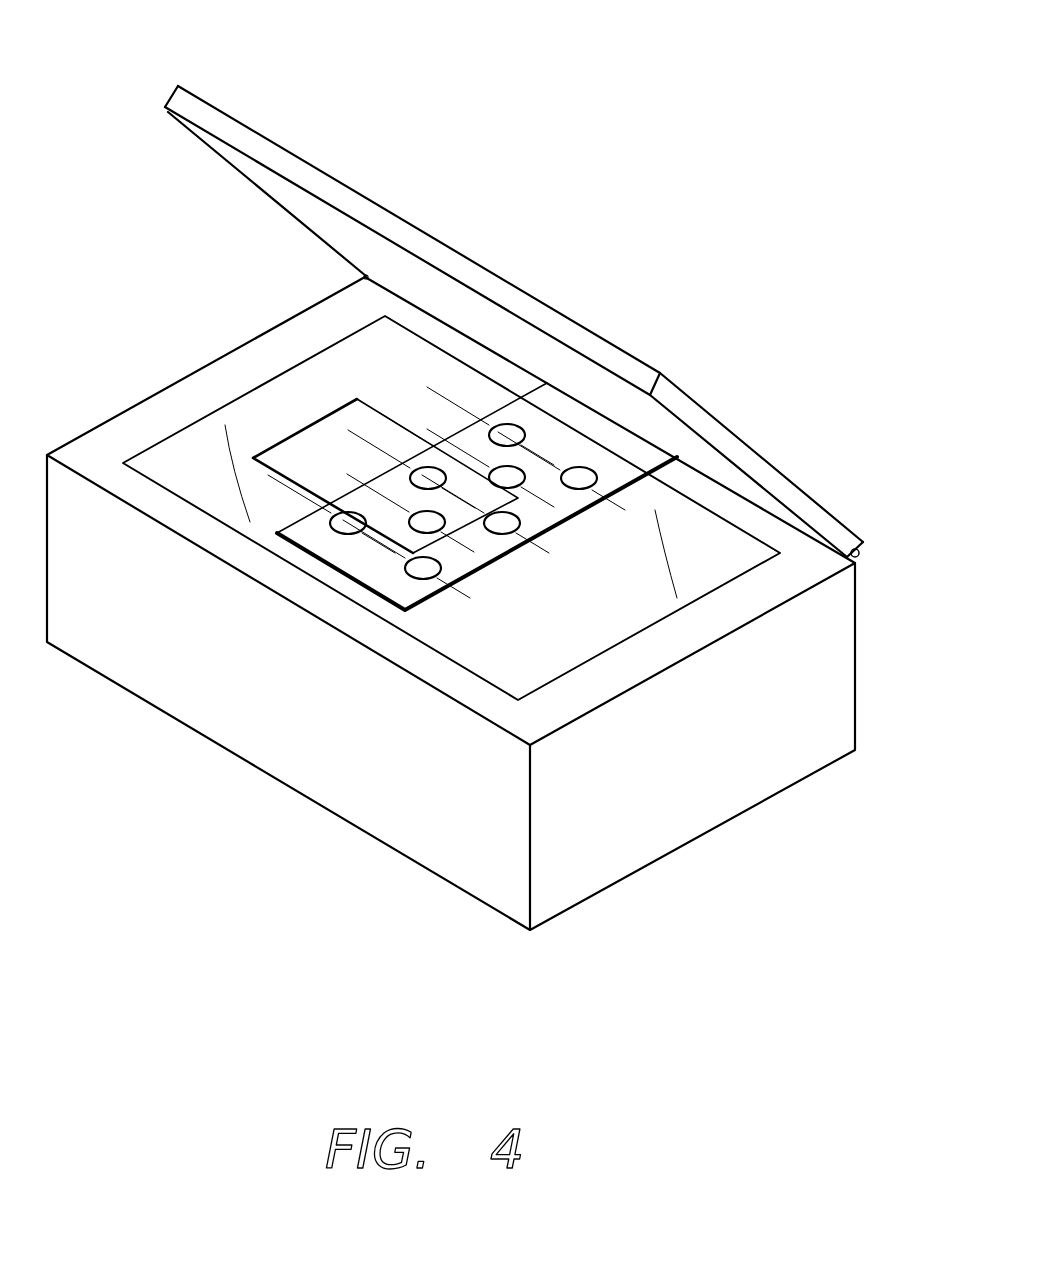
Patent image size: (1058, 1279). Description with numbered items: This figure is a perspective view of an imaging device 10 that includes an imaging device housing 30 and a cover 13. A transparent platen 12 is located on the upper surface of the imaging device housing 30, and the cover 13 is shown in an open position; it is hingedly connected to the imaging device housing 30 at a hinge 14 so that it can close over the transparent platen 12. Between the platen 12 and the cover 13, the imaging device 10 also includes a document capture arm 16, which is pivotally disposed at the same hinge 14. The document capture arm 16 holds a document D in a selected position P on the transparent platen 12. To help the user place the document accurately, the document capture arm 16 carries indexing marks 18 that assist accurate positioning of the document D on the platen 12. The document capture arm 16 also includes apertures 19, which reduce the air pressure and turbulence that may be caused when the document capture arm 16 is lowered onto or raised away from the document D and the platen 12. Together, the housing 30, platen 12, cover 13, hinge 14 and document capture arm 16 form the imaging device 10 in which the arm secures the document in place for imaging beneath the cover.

The imaging device 10 is at (672, 162).
The transparent platen 12 is at (258, 408).
The cover 13 is at (170, 103).
The hinge 14 is at (863, 552).
The document capture arm 16 is at (555, 508).
The indexing marks 18 is at (357, 502).
The apertures 19 is at (441, 566).
The imaging device housing 30 is at (253, 753).
The document D is at (356, 400).
The selected position P is at (397, 410).